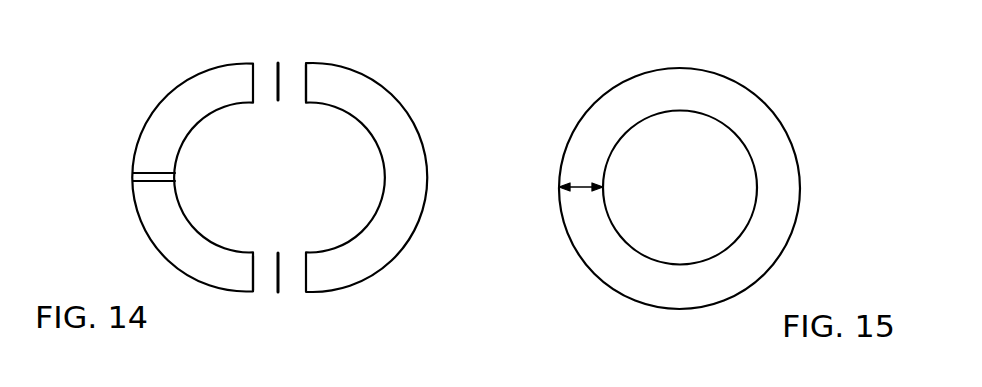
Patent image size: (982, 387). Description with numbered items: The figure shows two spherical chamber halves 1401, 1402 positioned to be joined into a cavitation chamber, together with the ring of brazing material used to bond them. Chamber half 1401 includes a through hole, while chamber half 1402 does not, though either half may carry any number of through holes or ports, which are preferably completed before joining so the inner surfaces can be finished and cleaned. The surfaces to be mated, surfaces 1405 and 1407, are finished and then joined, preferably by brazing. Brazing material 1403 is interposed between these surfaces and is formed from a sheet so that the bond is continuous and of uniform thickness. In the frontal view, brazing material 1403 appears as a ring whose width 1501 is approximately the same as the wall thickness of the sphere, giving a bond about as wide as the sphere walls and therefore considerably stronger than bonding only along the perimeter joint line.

In FIG. 14, the spherical chamber half 1401 is at (121, 89).
In FIG. 14, the spherical chamber half 1402 is at (424, 92).
In FIG. 14, the brazing material 1403 is at (276, 62).
In FIG. 15, the brazing material 1403 is at (658, 285).
In FIG. 14, the mating surface 1405 is at (253, 287).
In FIG. 14, the mating surface 1407 is at (306, 79).
In FIG. 15, the width of brazing ring 1501 is at (580, 186).